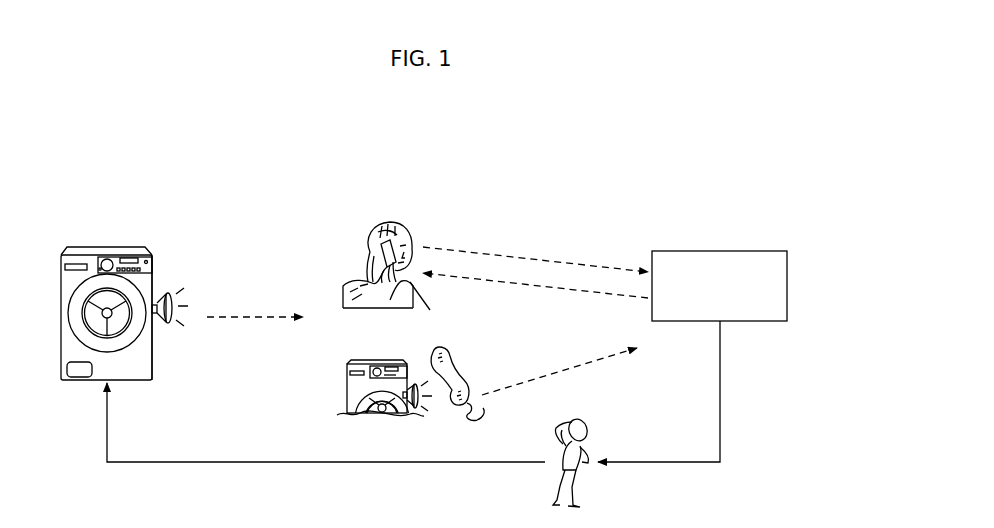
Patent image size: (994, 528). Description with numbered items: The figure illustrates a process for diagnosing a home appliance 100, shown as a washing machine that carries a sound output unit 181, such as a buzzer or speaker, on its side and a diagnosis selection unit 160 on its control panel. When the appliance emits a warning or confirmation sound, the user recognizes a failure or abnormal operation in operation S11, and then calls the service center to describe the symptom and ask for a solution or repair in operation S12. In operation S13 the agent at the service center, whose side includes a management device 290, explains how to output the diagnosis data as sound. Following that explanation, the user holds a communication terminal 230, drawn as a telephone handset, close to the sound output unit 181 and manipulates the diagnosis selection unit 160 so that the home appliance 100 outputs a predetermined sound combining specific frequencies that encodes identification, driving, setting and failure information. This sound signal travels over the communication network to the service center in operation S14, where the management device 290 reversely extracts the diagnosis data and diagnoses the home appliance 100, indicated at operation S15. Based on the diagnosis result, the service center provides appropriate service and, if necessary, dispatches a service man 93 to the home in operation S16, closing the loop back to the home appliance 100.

The home appliance 100 is at (103, 381).
The diagnosis selection unit 160 is at (145, 248).
The sound output unit 181 is at (170, 292).
The communication terminal 230 is at (456, 361).
The management device 290 is at (748, 251).
The service man 93 is at (584, 446).
The operation S11 is at (255, 329).
The operation S12 is at (535, 253).
The operation S13 is at (535, 292).
The operation S14 is at (559, 371).
The operation S15 is at (777, 251).
The operation S16 is at (654, 476).